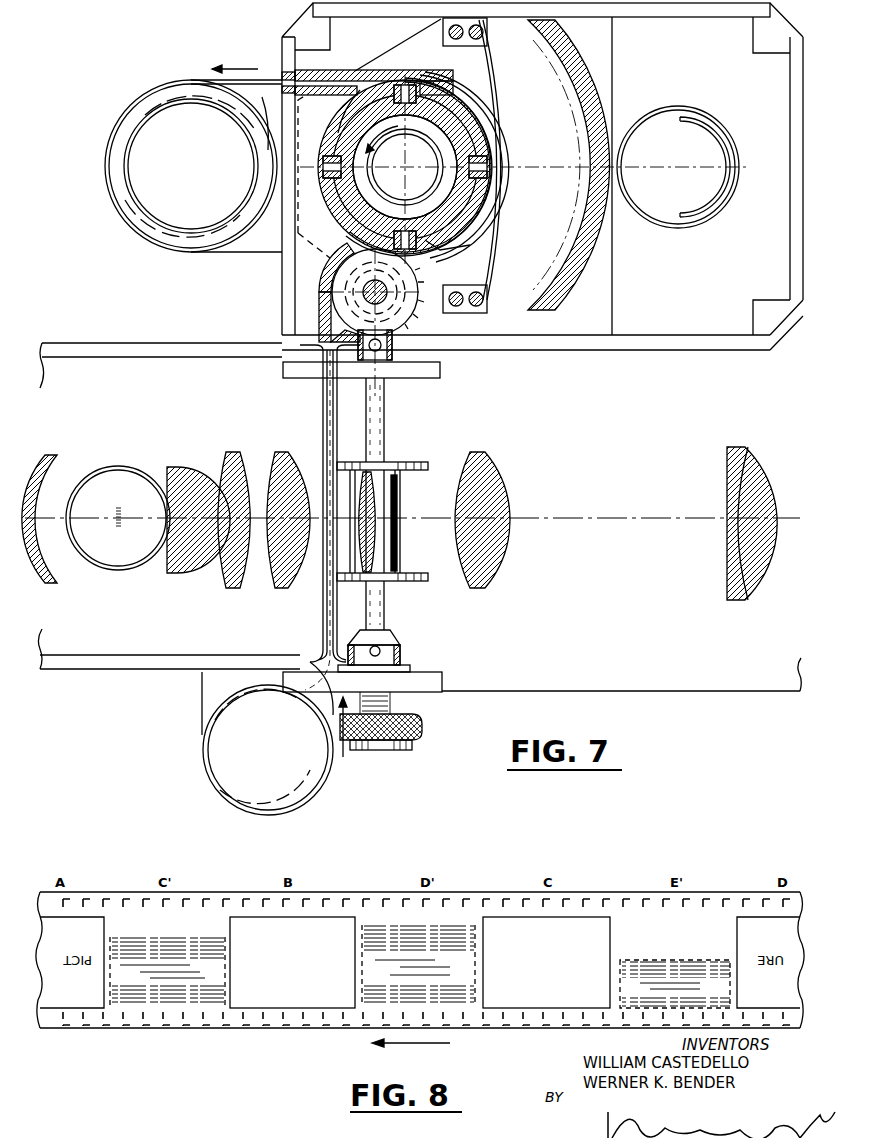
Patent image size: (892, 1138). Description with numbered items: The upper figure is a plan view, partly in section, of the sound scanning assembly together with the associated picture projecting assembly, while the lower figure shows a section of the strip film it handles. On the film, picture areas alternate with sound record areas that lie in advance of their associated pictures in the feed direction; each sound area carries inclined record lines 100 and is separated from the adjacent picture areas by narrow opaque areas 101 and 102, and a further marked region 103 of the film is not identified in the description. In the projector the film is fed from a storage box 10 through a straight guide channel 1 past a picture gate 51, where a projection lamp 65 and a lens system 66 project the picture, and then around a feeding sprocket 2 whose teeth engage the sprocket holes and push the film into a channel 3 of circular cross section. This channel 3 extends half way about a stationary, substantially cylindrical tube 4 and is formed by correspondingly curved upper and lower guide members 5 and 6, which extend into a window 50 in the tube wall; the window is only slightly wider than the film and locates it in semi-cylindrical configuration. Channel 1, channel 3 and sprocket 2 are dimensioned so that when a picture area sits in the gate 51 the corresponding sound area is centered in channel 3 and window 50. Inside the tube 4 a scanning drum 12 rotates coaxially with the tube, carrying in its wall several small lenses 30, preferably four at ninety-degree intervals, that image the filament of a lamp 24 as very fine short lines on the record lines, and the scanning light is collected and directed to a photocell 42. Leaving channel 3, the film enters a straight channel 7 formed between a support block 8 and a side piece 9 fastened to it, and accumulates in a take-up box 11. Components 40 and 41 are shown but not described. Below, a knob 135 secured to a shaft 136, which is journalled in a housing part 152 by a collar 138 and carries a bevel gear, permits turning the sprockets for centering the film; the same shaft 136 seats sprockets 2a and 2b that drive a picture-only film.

In FIG. 7, the straight guide channel 1 is at (340, 632).
In FIG. 7, the feeding sprocket 2 is at (418, 293).
In FIG. 7, the sprocket 2a is at (415, 463).
In FIG. 7, the sprocket 2b is at (412, 572).
In FIG. 7, the guide channel 3 is at (490, 208).
In FIG. 7, the cylindrical tube 4 is at (338, 133).
In FIG. 7, the upper guide member 5 is at (448, 258).
In FIG. 7, the lower guide member 6 is at (425, 240).
In FIG. 7, the straight channel 7 is at (287, 75).
In FIG. 7, the support block 8 is at (297, 263).
In FIG. 7, the side piece 9 is at (436, 72).
In FIG. 7, the storage box 10 is at (310, 798).
In FIG. 7, the take-up box 11 is at (122, 212).
In FIG. 7, the scanning drum 12 is at (460, 130).
In FIG. 7, the lamp 24 is at (383, 178).
In FIG. 7, the small lenses 30 is at (392, 98).
In FIG. 7, the curved gate plate 40 is at (593, 255).
In FIG. 7, the curved guide 41 is at (502, 250).
In FIG. 7, the photocell 42 is at (655, 228).
In FIG. 7, the window 50 is at (497, 182).
In FIG. 7, the picture gate 51 is at (323, 573).
In FIG. 7, the projection lamp 65 is at (118, 573).
In FIG. 7, the lens system 66 is at (243, 592).
In FIG. 8, the inclined record lines 100 is at (447, 935).
In FIG. 8, the narrow opaque area 101 is at (360, 940).
In FIG. 8, the narrow opaque area 102 is at (480, 942).
In FIG. 8, the sound track 103 is at (380, 922).
In FIG. 7, the knob 135 is at (425, 728).
In FIG. 7, the shaft 136 is at (388, 422).
In FIG. 7, the collar 138 is at (400, 650).
In FIG. 7, the projector housing part 152 is at (432, 690).